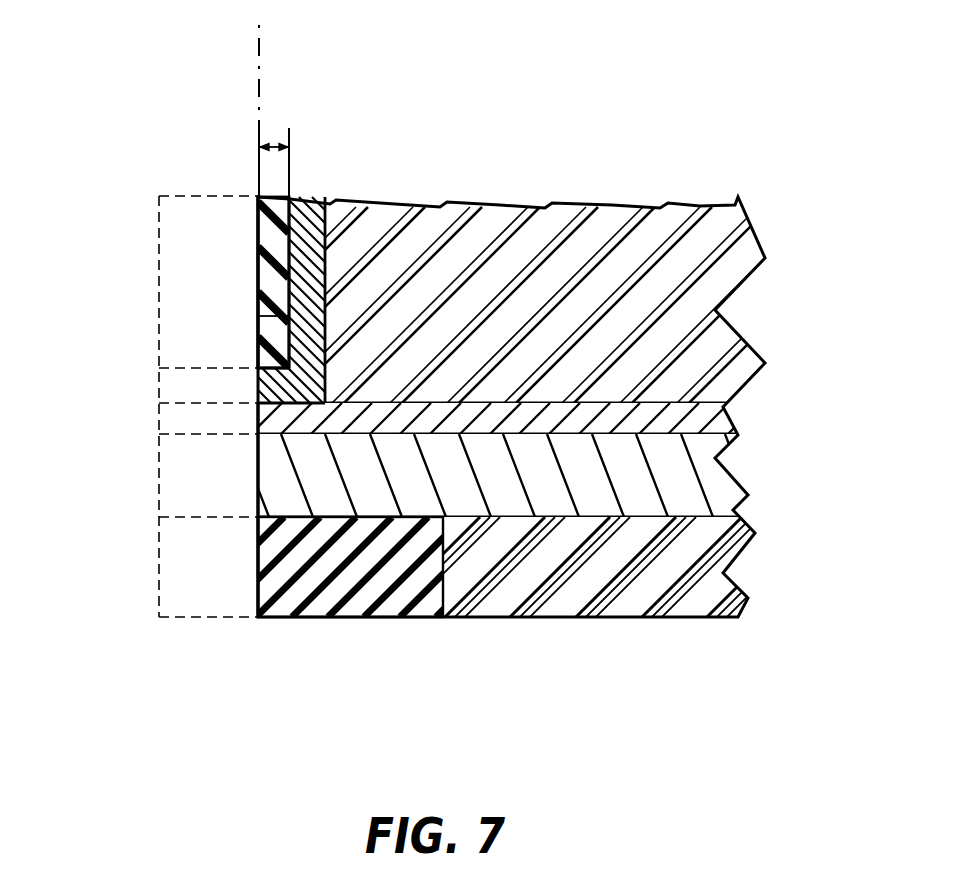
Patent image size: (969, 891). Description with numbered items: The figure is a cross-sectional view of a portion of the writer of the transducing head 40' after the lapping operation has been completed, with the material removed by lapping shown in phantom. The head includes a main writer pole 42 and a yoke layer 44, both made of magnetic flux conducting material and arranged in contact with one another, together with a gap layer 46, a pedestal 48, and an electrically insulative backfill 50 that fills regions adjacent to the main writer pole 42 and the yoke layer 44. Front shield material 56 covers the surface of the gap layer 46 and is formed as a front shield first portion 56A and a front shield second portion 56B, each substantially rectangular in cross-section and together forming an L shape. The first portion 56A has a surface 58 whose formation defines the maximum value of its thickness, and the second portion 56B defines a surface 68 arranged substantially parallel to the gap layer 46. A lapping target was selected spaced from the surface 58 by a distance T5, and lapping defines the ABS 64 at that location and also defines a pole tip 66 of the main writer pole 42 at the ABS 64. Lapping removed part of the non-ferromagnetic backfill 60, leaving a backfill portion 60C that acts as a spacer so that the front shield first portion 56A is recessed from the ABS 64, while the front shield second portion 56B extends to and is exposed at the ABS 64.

The transducing head 40' is at (511, 346).
The main writer pole 42 is at (704, 478).
The yoke layer 44 is at (717, 571).
The gap layer 46 is at (720, 421).
The pedestal 48 is at (711, 287).
The backfill 50 is at (312, 612).
The front shield material 56 is at (392, 197).
The front shield first portion 56A is at (327, 244).
The front shield second portion 56B is at (258, 385).
The surface 58 is at (258, 316).
The backfill 60 is at (254, 211).
The backfill portion 60C is at (271, 268).
The ABS 64 is at (245, 452).
The pole tip 66 is at (258, 485).
The surface 68 is at (280, 368).
The distance T5 is at (275, 145).